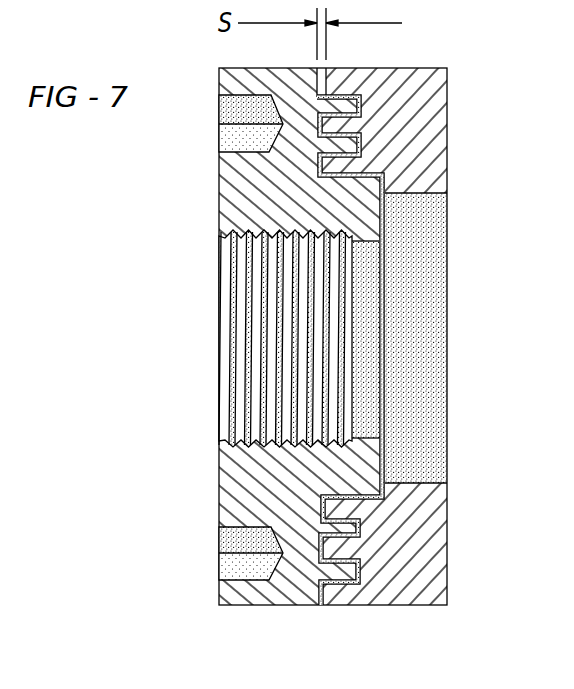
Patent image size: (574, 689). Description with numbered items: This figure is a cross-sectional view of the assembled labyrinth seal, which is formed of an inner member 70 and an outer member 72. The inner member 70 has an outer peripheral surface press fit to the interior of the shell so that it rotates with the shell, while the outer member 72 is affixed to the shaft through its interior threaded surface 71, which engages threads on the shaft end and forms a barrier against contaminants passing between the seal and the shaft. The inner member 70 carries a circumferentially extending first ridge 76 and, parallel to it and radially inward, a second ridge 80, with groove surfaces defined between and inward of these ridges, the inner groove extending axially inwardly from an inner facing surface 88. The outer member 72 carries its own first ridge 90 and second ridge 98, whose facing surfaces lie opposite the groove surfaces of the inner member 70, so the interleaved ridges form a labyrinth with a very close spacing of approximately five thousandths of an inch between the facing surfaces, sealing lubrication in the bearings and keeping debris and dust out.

The inner member 70 is at (382, 68).
The outer member 72 is at (268, 68).
The interior threaded surface 71 is at (243, 346).
The first ridge 76 is at (318, 604).
The inner facing surface 88 is at (384, 502).
The second ridge 98 is at (361, 528).
The second ridge 80 is at (345, 552).
The first ridge 90 is at (345, 570).